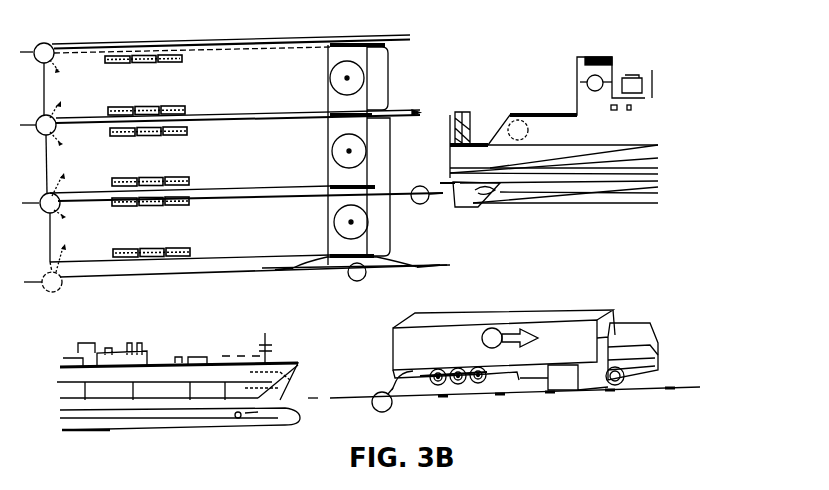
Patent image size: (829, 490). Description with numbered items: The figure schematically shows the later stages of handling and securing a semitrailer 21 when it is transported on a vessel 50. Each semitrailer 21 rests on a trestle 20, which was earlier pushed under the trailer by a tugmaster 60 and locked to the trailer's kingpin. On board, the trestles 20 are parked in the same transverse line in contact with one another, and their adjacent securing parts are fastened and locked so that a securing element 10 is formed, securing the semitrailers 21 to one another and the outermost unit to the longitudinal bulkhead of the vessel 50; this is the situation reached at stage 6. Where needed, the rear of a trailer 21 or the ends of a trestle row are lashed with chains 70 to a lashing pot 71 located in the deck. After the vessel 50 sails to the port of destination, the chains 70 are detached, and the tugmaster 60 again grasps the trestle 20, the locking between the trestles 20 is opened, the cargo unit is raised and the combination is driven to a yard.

The securing element 10 is at (333, 42).
The trestle 20 is at (352, 52).
The semitrailer 21 is at (84, 58).
The vessel 50 is at (555, 113).
The tugmaster 60 is at (652, 333).
The chains 70 is at (326, 268).
The lashing pot 71 is at (297, 270).
The stage 6 is at (395, 233).